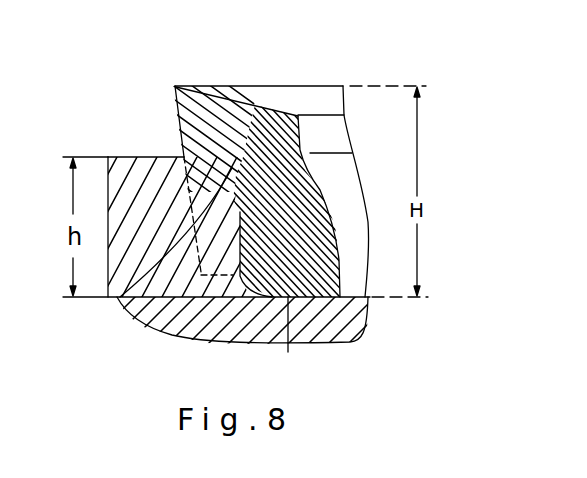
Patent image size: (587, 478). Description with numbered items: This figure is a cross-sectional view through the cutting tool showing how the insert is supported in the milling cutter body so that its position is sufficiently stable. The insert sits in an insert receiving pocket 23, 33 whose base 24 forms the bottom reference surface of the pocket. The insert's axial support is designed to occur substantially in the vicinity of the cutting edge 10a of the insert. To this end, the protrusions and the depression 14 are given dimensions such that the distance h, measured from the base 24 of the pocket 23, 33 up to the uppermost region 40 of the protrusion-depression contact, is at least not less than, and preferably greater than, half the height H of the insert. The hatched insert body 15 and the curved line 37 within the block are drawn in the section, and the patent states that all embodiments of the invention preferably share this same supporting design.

The cutting edge 10a is at (175, 87).
The tool holder body 15 is at (233, 277).
The uppermost region of the protrusion-depression contact 40 is at (176, 146).
The depression 14 is at (176, 147).
The cut surface line 37 is at (116, 300).
The base 24 is at (292, 340).
The insert receiving pocket 23 is at (342, 318).
The insert receiving pocket 33 is at (251, 338).